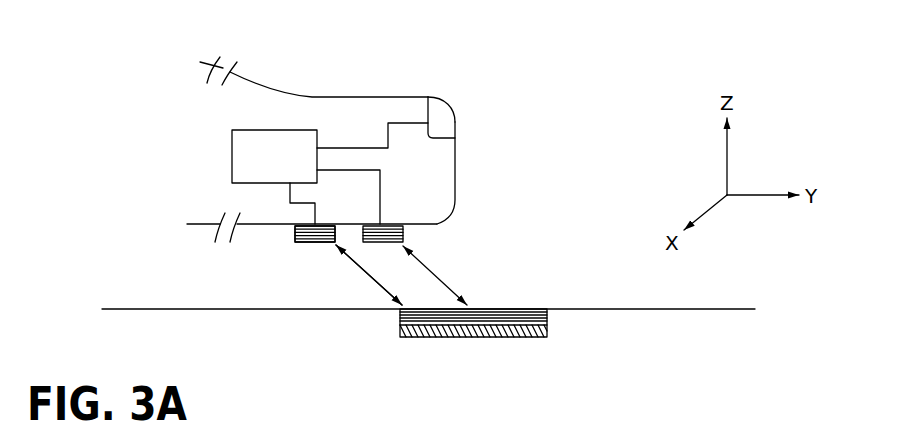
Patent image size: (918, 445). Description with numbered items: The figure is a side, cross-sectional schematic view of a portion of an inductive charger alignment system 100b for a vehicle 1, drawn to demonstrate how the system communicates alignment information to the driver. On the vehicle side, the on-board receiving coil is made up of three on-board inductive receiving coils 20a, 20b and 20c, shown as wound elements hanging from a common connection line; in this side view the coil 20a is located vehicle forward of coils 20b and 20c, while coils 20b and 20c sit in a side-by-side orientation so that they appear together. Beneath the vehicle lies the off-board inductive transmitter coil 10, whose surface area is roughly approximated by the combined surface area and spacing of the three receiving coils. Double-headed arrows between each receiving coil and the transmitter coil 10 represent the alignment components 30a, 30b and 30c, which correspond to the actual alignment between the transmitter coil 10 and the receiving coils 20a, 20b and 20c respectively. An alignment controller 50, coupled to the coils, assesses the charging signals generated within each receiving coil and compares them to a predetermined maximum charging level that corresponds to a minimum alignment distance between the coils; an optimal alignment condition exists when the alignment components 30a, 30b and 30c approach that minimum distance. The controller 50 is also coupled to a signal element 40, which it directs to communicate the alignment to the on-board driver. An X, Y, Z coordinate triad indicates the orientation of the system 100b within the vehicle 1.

The vehicle 1 is at (169, 135).
The off-board inductive transmitter coil 10 is at (528, 309).
The on-board inductive receiving coil 20a is at (412, 235).
The on-board inductive receiving coil 20b is at (306, 248).
The on-board inductive receiving coil 20c is at (271, 255).
The alignment component 30a is at (433, 272).
The alignment component 30b is at (363, 273).
The alignment component 30c is at (369, 306).
The signal element 40 is at (440, 123).
The alignment controller 50 is at (287, 147).
The inductive charger alignment system 100b is at (597, 63).